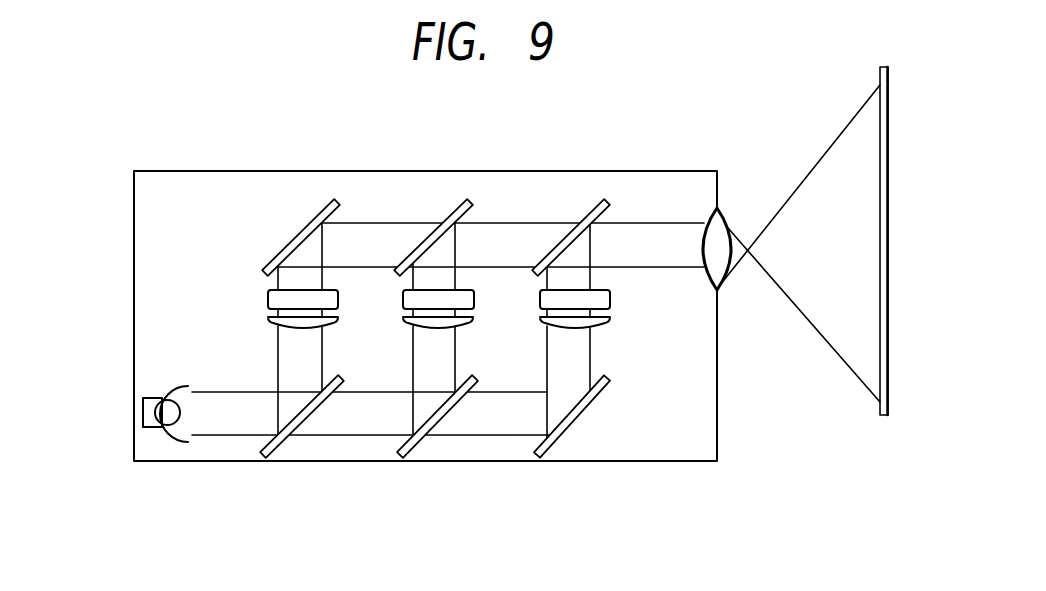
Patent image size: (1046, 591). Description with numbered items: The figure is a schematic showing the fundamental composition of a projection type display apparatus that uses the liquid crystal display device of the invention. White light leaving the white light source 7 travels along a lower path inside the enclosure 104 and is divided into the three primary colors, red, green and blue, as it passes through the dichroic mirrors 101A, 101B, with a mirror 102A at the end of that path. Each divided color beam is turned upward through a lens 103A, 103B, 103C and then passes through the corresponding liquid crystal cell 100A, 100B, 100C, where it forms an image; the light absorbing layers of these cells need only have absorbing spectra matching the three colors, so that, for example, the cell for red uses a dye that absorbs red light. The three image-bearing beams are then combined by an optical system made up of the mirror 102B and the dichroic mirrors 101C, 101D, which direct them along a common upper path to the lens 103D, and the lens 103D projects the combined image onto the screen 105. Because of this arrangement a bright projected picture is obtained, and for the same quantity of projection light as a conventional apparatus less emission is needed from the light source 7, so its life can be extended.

The white light source 7 is at (169, 418).
The liquid crystal cell 100A is at (268, 296).
The liquid crystal cell 100B is at (403, 298).
The liquid crystal cell 100C is at (540, 298).
The dichroic mirror 101A is at (305, 422).
The dichroic mirror 101B is at (435, 420).
The dichroic mirror 101C is at (452, 216).
The dichroic mirror 101D is at (590, 217).
The mirror 102A is at (580, 417).
The mirror 102B is at (313, 219).
The lens 103A is at (338, 326).
The lens 103B is at (470, 326).
The lens 103C is at (605, 327).
The lens 103D is at (718, 272).
The housing 104 is at (134, 212).
The screen 105 is at (880, 138).